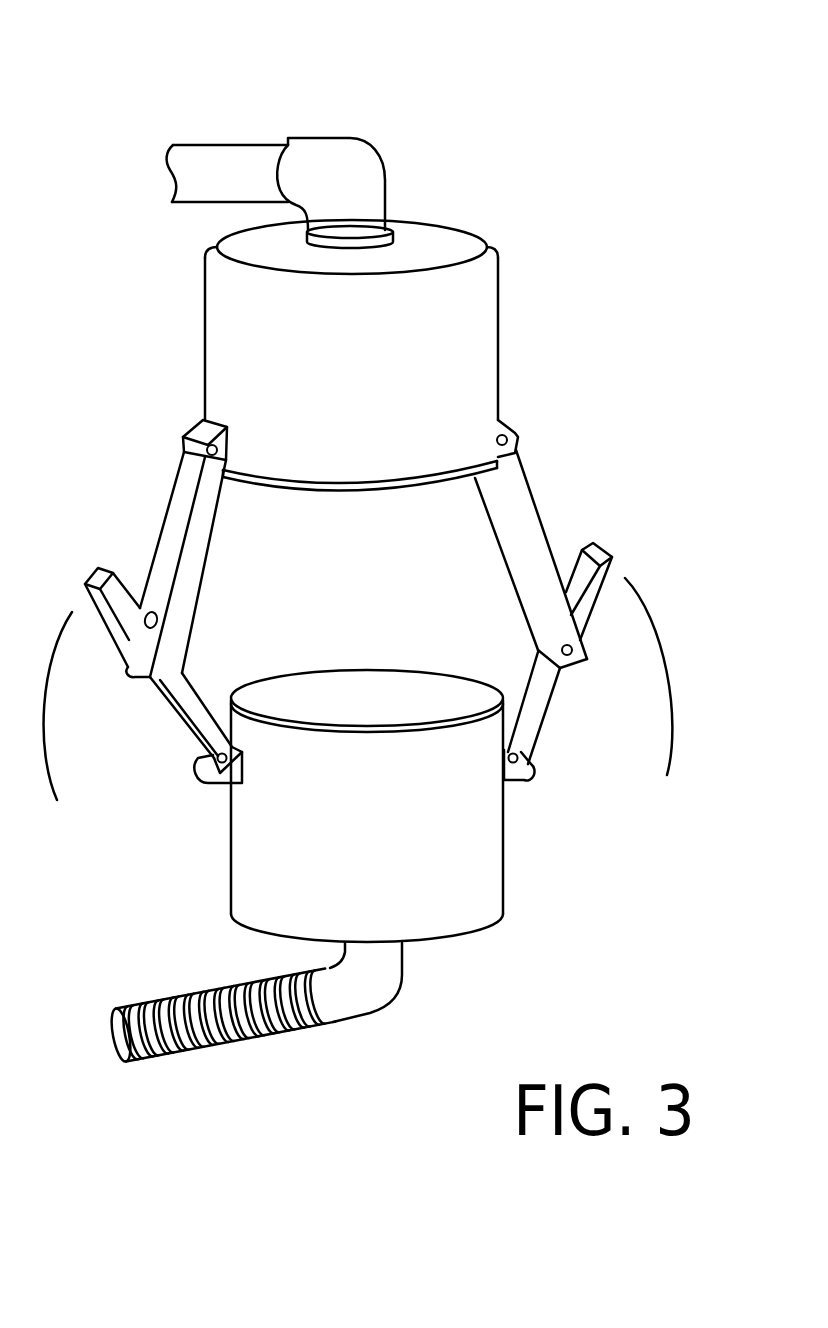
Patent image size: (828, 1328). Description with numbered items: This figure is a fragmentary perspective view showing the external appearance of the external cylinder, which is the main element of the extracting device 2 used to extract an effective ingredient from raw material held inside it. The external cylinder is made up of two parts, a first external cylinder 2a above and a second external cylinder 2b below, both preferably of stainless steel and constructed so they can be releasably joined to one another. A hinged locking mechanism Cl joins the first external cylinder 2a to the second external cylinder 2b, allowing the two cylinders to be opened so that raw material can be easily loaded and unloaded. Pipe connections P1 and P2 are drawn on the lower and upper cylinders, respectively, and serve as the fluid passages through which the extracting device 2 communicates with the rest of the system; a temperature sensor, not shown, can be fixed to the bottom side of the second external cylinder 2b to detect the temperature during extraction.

The extracting device 2 is at (608, 267).
The first external cylinder 2a is at (205, 308).
The second external cylinder 2b is at (504, 887).
The hinged locking mechanism Cl is at (528, 532).
The inlet pipe P1 is at (207, 1050).
The outlet pipe P2 is at (223, 143).